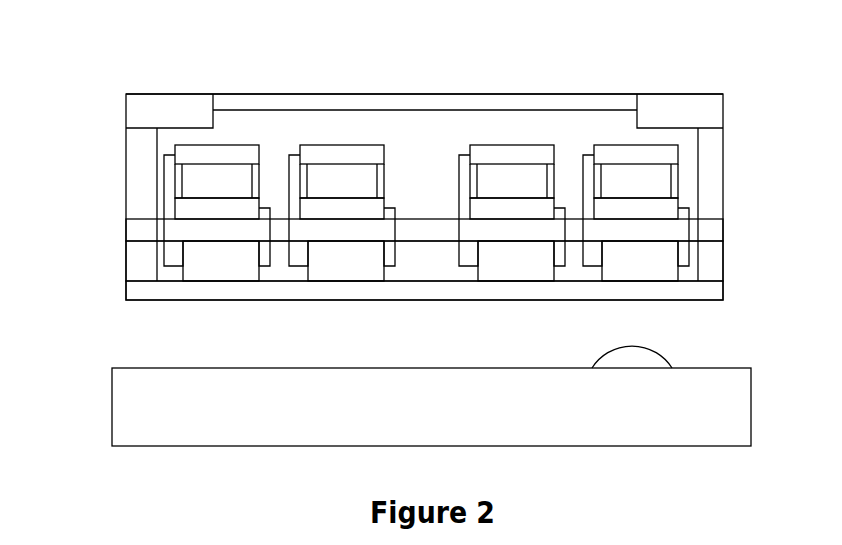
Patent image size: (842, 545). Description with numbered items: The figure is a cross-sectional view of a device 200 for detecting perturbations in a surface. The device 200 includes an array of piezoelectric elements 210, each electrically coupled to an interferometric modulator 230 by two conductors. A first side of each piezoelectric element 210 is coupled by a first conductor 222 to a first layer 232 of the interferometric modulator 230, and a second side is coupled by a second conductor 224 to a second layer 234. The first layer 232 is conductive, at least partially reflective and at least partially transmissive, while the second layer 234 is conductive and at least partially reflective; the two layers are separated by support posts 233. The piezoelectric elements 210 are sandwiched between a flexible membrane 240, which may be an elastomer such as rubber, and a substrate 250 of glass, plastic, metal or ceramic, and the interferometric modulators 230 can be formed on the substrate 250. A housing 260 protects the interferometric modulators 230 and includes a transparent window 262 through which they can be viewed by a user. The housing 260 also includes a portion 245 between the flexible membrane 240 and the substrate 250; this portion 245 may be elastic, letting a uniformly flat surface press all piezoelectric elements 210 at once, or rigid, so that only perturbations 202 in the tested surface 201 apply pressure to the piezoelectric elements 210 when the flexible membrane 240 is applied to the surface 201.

The device 200 is at (163, 58).
The surface 201 is at (92, 399).
The perturbations 202 is at (670, 359).
The piezoelectric elements 210 is at (222, 276).
The first conductor 222 is at (468, 267).
The second conductor 224 is at (560, 267).
The interferometric modulator 230 is at (426, 166).
The first layer 232 is at (385, 152).
The support posts 233 is at (385, 178).
The second layer 234 is at (385, 205).
The flexible membrane 240 is at (724, 291).
The portion 245 is at (724, 268).
The substrate 250 is at (724, 232).
The housing 260 is at (705, 95).
The transparent window 262 is at (575, 95).